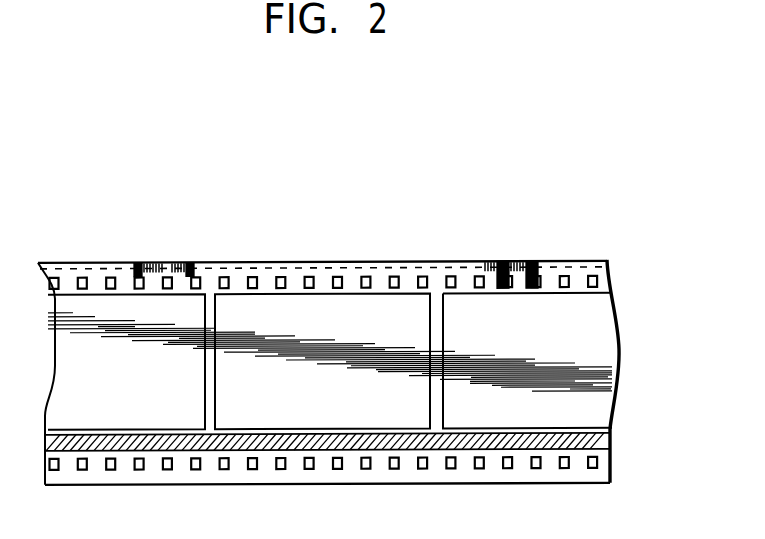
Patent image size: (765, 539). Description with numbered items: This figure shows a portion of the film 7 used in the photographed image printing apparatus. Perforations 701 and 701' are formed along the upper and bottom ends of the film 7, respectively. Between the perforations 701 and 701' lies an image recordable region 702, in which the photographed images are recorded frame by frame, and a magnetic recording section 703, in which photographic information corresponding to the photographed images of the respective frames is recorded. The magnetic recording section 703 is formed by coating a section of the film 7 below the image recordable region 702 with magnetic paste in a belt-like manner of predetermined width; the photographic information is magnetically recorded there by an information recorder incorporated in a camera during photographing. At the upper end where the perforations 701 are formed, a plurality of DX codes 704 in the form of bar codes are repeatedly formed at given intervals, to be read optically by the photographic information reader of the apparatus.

The film 7 is at (291, 243).
The perforations 701 is at (371, 272).
The perforations 701' is at (380, 469).
The image recordable region 702 is at (621, 427).
The magnetic recording section 703 is at (612, 447).
The bar code / optical recording marks 704 is at (522, 262).